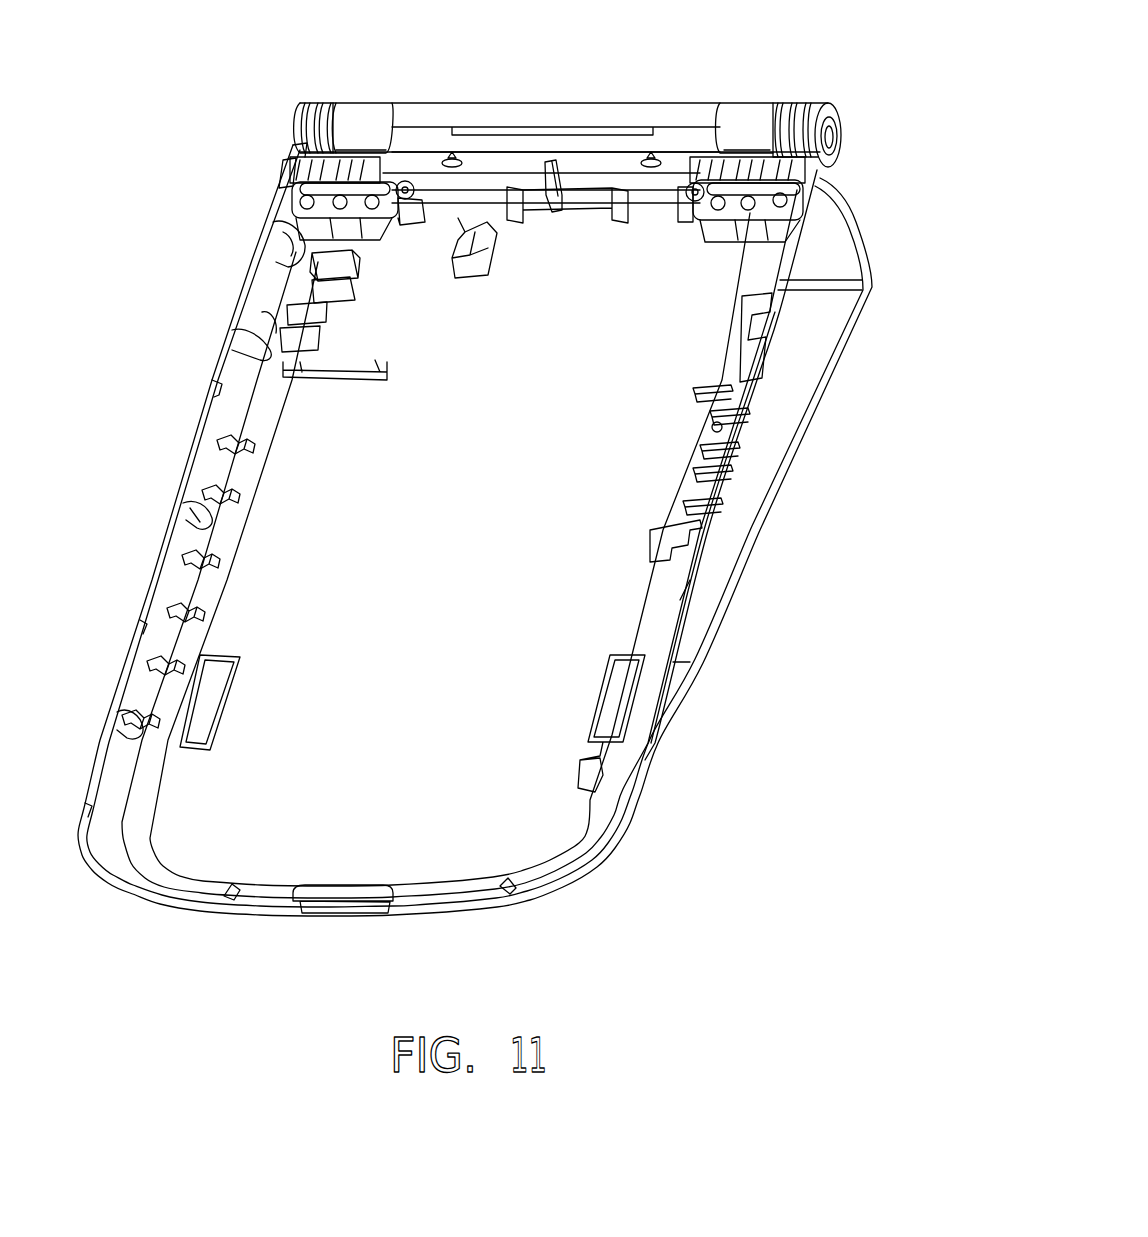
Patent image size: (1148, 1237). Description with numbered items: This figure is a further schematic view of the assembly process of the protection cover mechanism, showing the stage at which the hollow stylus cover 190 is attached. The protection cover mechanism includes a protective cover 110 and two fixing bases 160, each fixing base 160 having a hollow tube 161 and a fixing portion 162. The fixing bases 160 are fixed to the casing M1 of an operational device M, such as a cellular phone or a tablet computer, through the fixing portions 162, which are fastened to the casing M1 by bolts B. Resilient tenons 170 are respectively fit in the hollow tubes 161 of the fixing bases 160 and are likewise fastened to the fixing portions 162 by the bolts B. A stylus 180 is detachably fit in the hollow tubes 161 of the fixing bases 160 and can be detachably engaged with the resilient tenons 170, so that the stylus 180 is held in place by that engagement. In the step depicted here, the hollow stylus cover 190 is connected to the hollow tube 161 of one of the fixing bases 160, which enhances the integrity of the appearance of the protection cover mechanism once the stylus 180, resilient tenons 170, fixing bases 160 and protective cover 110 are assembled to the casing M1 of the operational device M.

The protective cover 110 is at (793, 470).
The fixing base 160 is at (303, 250).
The hollow tube 161 is at (360, 118).
The fixing portion 162 is at (400, 213).
The resilient tenon 170 is at (337, 180).
The stylus 180 is at (830, 108).
The hollow stylus cover 190 is at (312, 103).
The bolt B is at (410, 182).
The operational device M is at (693, 595).
The casing M1 is at (587, 255).